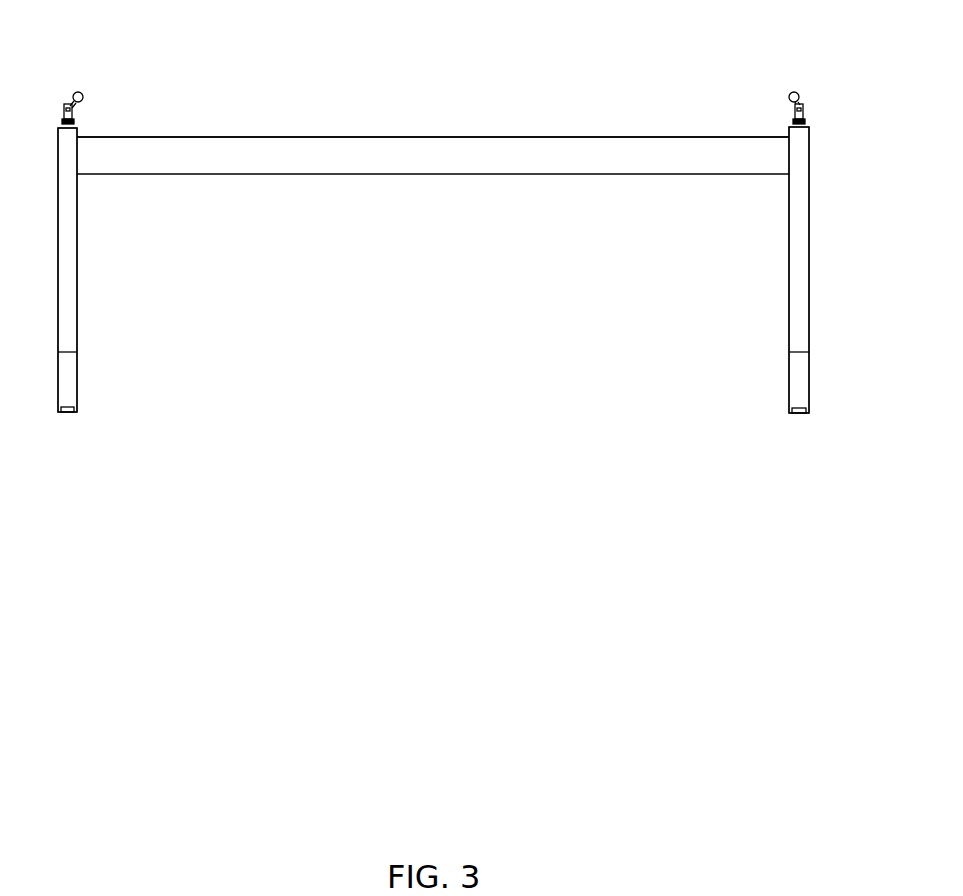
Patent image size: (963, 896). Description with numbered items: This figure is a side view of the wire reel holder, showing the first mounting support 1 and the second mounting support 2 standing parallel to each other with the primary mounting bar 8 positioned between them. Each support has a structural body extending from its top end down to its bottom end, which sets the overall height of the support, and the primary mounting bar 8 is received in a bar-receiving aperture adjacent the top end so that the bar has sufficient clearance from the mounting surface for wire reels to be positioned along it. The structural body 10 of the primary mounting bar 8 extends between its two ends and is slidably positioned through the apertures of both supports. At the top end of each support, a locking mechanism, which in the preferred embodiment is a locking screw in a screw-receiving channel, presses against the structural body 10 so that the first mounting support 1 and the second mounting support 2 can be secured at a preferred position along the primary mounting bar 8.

The first mounting support 1 is at (96, 375).
The second mounting support 2 is at (782, 367).
The primary mounting bar 8 is at (341, 176).
The structural body 10 is at (341, 138).